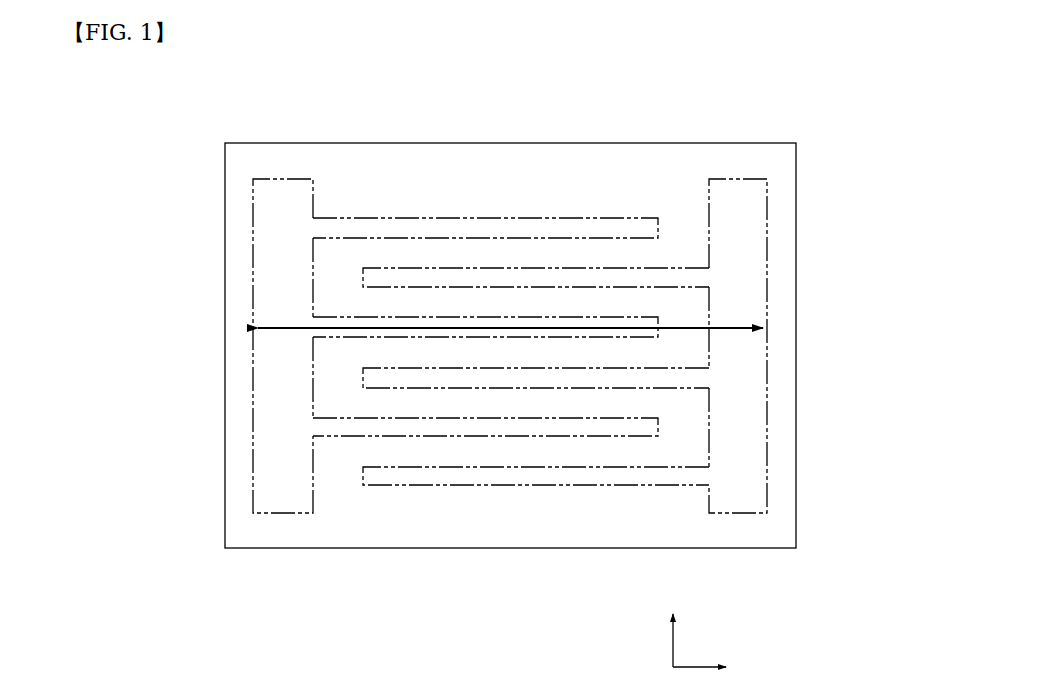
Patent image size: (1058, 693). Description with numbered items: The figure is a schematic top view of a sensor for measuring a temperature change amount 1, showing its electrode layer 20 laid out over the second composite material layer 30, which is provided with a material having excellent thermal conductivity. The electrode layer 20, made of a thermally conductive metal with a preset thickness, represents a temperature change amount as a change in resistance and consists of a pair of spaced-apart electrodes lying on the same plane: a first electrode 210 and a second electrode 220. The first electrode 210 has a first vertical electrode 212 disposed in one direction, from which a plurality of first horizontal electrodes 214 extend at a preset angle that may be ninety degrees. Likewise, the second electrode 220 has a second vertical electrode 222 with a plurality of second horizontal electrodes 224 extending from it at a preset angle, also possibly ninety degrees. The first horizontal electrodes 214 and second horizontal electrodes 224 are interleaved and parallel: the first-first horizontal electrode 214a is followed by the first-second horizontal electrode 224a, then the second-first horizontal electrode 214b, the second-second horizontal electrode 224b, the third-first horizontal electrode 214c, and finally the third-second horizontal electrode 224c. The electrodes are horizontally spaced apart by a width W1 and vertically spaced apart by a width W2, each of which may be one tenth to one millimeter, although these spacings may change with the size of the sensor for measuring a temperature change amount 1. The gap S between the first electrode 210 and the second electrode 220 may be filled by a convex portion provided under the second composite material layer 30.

The sensor for measuring a temperature change amount 1 is at (537, 107).
The electrode layer 20 is at (577, 213).
The second composite material layer 30 is at (770, 157).
The first electrode 210 is at (280, 517).
The first vertical electrode 212 is at (262, 506).
The first horizontal electrodes 214 is at (878, 233).
The first-first horizontal electrode 214a is at (650, 227).
The second-first horizontal electrode 214b is at (640, 316).
The third-first horizontal electrode 214c is at (650, 427).
The second electrode 220 is at (740, 517).
The second vertical electrode 222 is at (760, 505).
The second horizontal electrodes 224 is at (141, 283).
The first-second horizontal electrode 224a is at (372, 274).
The second-second horizontal electrode 224b is at (383, 367).
The third-second horizontal electrode 224c is at (380, 467).
The gap S is at (563, 452).
The width W1 is at (360, 475).
The width W2 is at (448, 439).